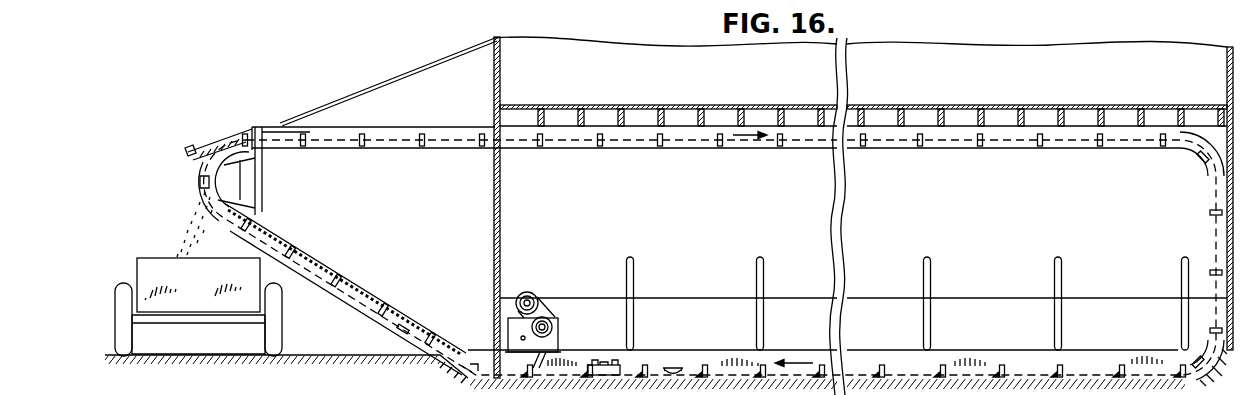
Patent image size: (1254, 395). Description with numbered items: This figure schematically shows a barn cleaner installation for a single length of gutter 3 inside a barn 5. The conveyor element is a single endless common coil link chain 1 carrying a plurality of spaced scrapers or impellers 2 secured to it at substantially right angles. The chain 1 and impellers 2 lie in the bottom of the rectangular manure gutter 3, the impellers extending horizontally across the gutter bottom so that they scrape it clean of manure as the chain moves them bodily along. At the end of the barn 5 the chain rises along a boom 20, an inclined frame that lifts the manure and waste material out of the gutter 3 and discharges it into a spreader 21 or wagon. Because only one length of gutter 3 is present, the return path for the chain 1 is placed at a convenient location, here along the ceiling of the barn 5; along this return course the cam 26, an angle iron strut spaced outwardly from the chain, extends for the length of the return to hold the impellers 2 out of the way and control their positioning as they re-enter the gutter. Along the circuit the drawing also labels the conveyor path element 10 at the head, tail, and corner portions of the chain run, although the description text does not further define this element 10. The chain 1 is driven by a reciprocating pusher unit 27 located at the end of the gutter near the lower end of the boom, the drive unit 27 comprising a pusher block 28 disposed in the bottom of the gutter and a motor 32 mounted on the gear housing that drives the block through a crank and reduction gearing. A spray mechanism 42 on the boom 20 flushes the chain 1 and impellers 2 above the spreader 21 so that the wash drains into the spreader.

The endless common coil link chain 1 is at (406, 322).
The scrapers or impellers 2 is at (392, 320).
The manure gutter 3 is at (672, 363).
The barn 5 is at (493, 80).
The endless conveyor chain 10 is at (1200, 150).
The boom 20 is at (326, 255).
The spreader 21 is at (157, 262).
The cam 26 is at (443, 157).
The reciprocating pusher unit 27 is at (559, 330).
The pusher block 28 is at (614, 364).
The motor 32 is at (531, 294).
The spray mechanism 42 is at (218, 138).